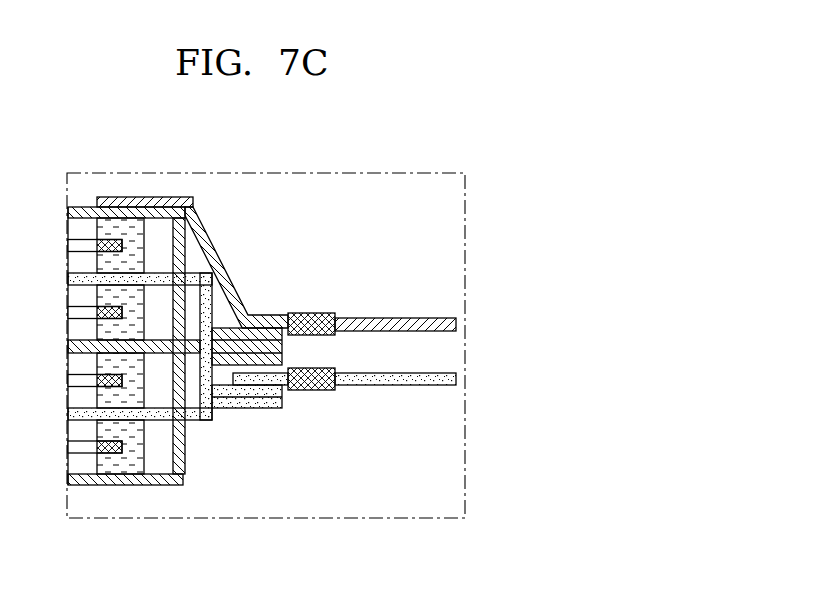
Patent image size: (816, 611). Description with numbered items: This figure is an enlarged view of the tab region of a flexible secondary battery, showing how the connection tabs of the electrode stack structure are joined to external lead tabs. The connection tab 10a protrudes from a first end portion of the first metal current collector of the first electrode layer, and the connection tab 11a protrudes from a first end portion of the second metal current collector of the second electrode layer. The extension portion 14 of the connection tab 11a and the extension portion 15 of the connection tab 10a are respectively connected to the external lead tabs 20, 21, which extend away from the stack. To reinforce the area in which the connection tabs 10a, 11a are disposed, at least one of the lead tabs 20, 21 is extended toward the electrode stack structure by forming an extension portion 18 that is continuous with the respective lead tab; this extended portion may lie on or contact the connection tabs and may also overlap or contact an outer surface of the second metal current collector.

The connection tab 10a is at (199, 207).
The connection tab 11a is at (173, 486).
The extension portion 14 is at (252, 316).
The extension portion 15 is at (260, 398).
The extension portion 18 is at (123, 195).
The lead tab 20 is at (415, 318).
The lead tab 21 is at (422, 385).